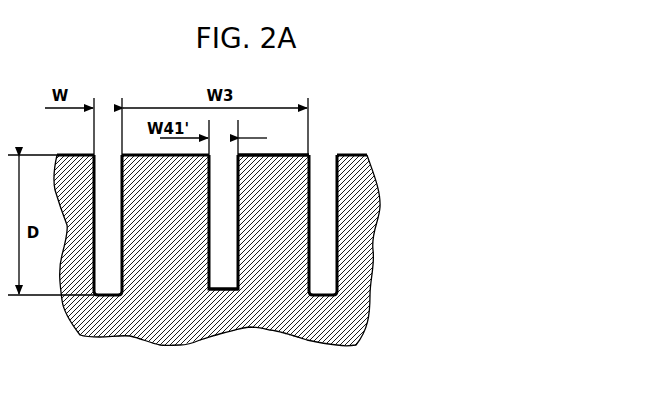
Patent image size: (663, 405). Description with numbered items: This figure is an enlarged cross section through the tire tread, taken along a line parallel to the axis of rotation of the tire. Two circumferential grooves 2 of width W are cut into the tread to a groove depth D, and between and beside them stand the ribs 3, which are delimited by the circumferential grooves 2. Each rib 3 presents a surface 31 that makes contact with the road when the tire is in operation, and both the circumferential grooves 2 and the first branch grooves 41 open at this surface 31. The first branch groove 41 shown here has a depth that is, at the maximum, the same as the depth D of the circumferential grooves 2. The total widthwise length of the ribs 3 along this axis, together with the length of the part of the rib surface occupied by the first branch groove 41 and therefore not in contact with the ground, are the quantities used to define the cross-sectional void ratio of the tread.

The circumferential groove 2 is at (215, 225).
The rib 3 is at (212, 175).
The surface 31 is at (277, 145).
The first branch groove 41 is at (225, 290).